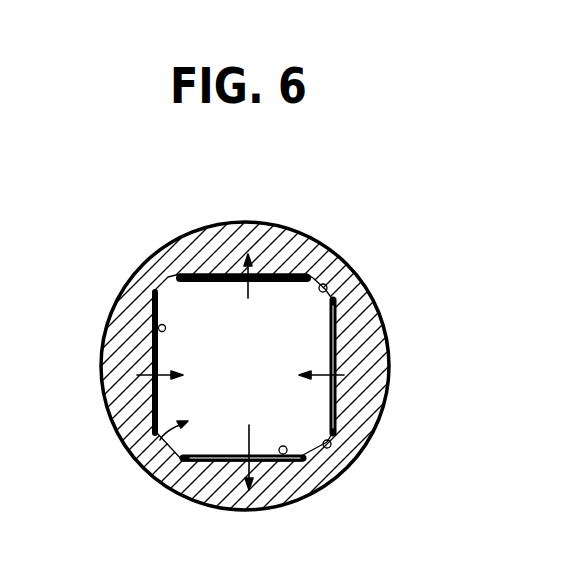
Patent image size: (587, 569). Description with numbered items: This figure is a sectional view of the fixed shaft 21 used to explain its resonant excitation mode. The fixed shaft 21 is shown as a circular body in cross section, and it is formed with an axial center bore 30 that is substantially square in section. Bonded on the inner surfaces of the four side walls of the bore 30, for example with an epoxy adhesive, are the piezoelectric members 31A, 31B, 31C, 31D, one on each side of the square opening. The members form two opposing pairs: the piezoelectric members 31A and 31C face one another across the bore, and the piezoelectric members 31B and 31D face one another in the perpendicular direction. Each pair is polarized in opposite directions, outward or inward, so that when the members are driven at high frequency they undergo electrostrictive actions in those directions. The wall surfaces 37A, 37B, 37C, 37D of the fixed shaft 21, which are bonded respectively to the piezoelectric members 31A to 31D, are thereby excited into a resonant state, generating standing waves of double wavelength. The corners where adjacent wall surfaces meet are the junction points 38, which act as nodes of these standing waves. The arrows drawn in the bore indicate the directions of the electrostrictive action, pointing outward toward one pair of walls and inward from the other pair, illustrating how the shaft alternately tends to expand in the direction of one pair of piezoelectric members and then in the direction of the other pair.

The fixed shaft 21 is at (160, 250).
The axial center bore 30 is at (140, 462).
The piezoelectric member 31A is at (295, 458).
The piezoelectric member 31B is at (330, 385).
The piezoelectric member 31C is at (290, 274).
The piezoelectric member 31D is at (160, 327).
The wall surface 37A is at (238, 510).
The wall surface 37B is at (387, 335).
The wall surface 37C is at (243, 222).
The wall surface 37D is at (103, 383).
The junction point 38 is at (335, 278).